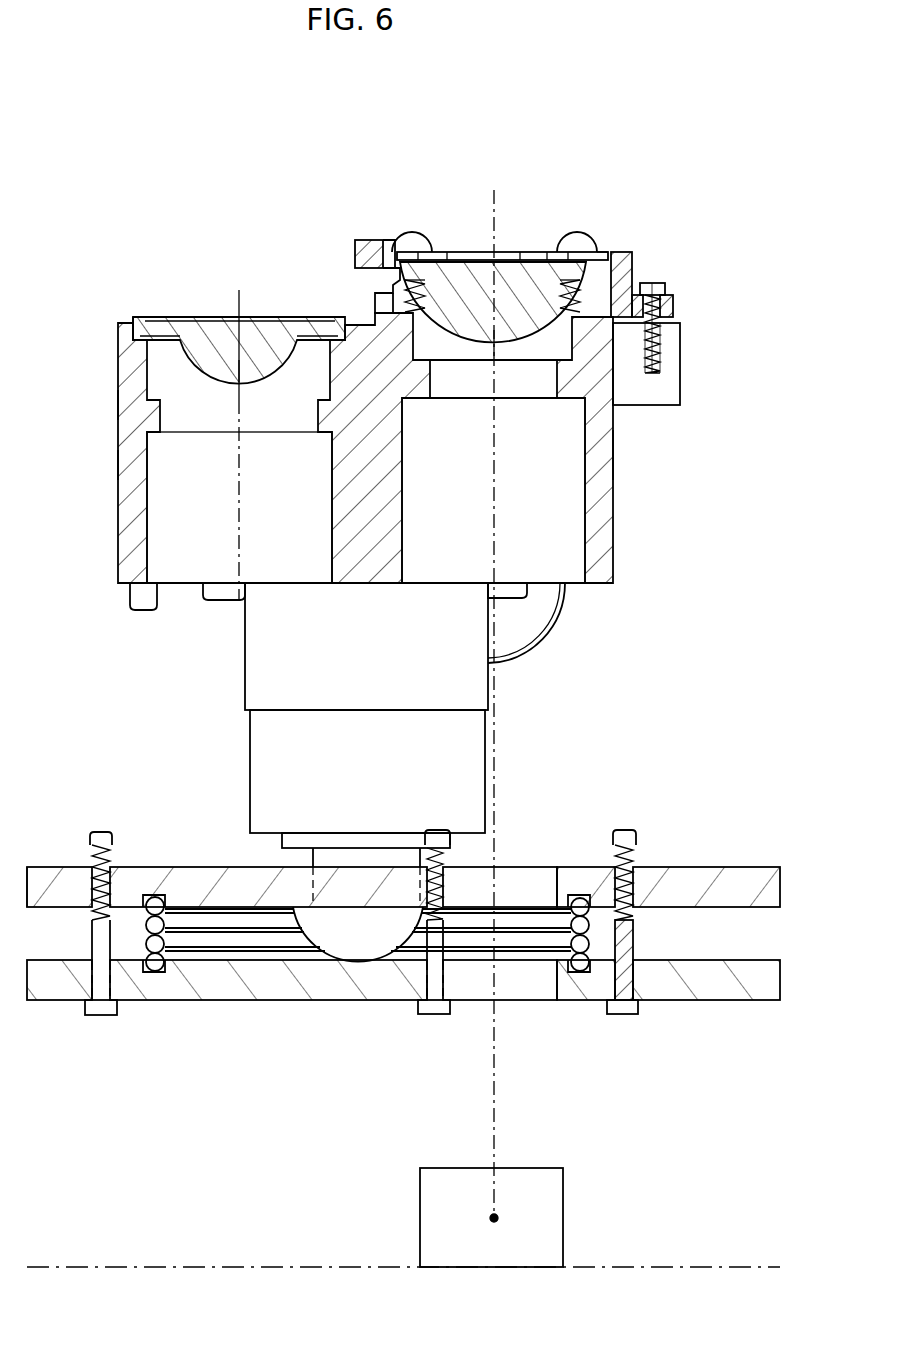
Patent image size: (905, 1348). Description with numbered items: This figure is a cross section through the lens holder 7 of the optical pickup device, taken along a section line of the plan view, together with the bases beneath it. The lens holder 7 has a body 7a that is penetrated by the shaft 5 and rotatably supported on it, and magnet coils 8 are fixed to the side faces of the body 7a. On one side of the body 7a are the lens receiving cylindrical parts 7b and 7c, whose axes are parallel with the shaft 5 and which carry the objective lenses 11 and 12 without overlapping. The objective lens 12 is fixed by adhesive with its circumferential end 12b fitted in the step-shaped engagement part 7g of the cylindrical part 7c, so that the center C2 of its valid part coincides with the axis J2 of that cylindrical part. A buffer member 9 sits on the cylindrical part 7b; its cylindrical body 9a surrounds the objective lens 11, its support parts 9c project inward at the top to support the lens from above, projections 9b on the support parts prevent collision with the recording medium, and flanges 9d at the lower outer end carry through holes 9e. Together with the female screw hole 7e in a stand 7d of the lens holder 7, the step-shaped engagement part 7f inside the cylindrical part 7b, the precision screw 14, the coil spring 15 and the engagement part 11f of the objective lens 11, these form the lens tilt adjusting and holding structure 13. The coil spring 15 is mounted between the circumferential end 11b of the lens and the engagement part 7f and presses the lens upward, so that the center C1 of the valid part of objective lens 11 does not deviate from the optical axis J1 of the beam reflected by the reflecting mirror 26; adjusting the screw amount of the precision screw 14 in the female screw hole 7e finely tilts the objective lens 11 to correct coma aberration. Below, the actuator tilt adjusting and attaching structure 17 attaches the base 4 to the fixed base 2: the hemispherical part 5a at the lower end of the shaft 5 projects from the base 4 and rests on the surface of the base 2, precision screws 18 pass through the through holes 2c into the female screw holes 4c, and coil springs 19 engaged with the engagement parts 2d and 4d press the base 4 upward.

The base 2 is at (745, 960).
The through hole 2c is at (92, 980).
The engagement part 2d is at (152, 975).
The base 4 is at (748, 867).
The female screw hole 4c is at (92, 880).
The engagement part 4d is at (147, 893).
The shaft 5 is at (370, 832).
The hemispherical part 5a is at (352, 945).
The lens holder 7 is at (118, 378).
The body 7a is at (118, 405).
The lens receiving cylindrical part 7b is at (614, 456).
The lens receiving cylindrical part 7c is at (118, 462).
The stand 7d is at (682, 366).
The female screw hole 7e is at (672, 355).
The engagement part 7f is at (402, 318).
The engagement part 7g is at (137, 340).
The magnet coil 8 is at (548, 640).
The buffer member 9 is at (368, 240).
The body 9a is at (613, 252).
The projection 9b is at (412, 232).
The support part 9c is at (432, 252).
The flange 9d is at (672, 306).
The through hole 9e is at (668, 297).
The objective lens 11 is at (482, 245).
The circumferential end 11b is at (381, 278).
The engagement part 11f is at (378, 301).
The objective lens 12 is at (225, 317).
The circumferential end 12b is at (133, 321).
The lens tilt adjusting and holding structure 13 is at (690, 220).
The precision screw 14 is at (648, 285).
The coil spring 15 is at (418, 315).
The actuator tilt adjusting and attaching structure 17 is at (688, 828).
The precision screw 18 is at (100, 1015).
The coil spring 19 is at (236, 945).
The reflecting mirror 26 is at (536, 1168).
The center of valid part of objective lens 11 C1 is at (497, 352).
The center of valid part of objective lens 12 C2 is at (247, 365).
The optical axis J1 is at (497, 440).
The axis of lens receiving cylindrical part 7c J2 is at (240, 455).